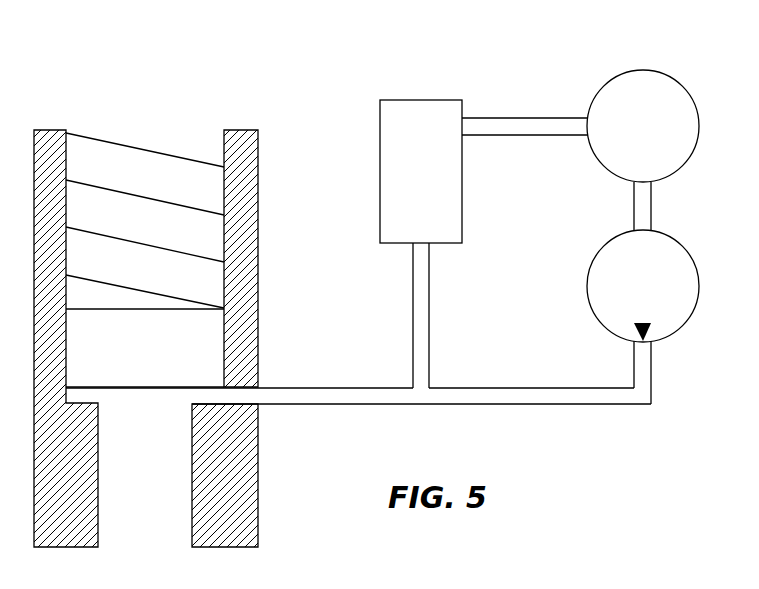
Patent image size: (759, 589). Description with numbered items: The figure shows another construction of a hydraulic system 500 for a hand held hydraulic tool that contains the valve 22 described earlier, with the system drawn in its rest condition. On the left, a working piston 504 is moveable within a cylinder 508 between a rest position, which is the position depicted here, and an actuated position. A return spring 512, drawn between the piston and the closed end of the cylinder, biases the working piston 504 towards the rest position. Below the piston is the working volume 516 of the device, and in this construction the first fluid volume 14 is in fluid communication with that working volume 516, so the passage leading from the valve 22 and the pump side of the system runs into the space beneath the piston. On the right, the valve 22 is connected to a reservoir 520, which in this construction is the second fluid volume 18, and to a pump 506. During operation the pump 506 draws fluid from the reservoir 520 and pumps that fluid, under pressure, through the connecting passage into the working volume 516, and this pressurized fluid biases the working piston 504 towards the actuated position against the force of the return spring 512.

The hydraulic system 500 is at (340, 68).
The cylinder 508 is at (224, 242).
The return spring 512 is at (138, 148).
The working piston 504 is at (200, 334).
The first fluid volume 14 is at (370, 400).
The working volume 516 is at (236, 397).
The valve 22 is at (420, 100).
The second fluid volume 18 is at (525, 128).
The reservoir 520 is at (688, 93).
The pump 506 is at (688, 253).